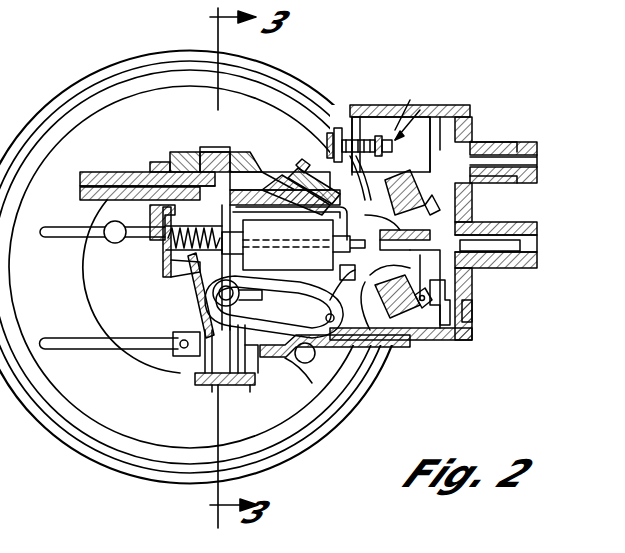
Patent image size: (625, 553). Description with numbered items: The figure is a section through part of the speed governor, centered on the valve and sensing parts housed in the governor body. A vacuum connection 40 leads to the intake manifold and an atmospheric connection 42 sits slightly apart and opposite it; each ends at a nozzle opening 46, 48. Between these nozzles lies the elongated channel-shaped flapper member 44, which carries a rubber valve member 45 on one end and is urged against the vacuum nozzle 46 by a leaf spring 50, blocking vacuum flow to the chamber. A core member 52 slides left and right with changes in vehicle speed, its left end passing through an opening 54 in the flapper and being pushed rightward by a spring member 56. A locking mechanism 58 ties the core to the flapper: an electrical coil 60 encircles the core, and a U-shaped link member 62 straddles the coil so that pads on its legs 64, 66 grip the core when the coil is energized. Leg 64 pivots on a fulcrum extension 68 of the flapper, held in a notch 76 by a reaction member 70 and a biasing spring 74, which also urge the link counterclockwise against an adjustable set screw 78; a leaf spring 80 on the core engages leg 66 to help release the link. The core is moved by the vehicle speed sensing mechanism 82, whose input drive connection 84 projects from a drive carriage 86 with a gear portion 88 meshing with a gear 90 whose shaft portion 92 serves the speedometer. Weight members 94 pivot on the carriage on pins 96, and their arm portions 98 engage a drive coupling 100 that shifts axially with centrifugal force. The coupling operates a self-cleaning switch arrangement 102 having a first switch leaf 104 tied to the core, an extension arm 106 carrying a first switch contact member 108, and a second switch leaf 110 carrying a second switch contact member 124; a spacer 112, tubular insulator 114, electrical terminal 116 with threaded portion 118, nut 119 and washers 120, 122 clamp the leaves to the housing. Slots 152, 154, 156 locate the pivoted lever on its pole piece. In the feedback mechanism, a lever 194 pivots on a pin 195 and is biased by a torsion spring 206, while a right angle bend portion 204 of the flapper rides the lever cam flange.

The vacuum connection 40 is at (107, 172).
The atmospheric connection 42 is at (256, 182).
The flapper member 44 is at (210, 160).
The rubber valve member 45 is at (218, 150).
The nozzle opening 46 is at (182, 160).
The nozzle opening 48 is at (240, 162).
The leaf spring 50 is at (200, 333).
The core member 52 is at (166, 270).
The opening 54 is at (190, 280).
The spring member 56 is at (168, 248).
The locking mechanism 58 is at (268, 190).
The electrical coil 60 is at (316, 284).
The link member 62 is at (292, 252).
The leg 64 is at (246, 232).
The leg 66 is at (298, 232).
The fulcrum extension 68 is at (121, 222).
The reaction member 70 is at (166, 217).
The biasing spring 74 is at (162, 162).
The notch 76 is at (140, 240).
The adjustable set screw 78 is at (285, 172).
The leaf spring 80 is at (350, 275).
The vehicle speed sensing mechanism 82 is at (436, 117).
The input drive connection 84 is at (535, 242).
The drive carriage 86 is at (474, 310).
The gear portion 88 is at (462, 290).
The gear 90 is at (462, 112).
The shaft portion 92 is at (535, 152).
The weight members 94 is at (410, 126).
The pins 96 is at (421, 341).
The arm portions 98 is at (401, 291).
The drive coupling 100 is at (357, 300).
The self-cleaning switch arrangement 102 is at (410, 115).
The first switch leaf 104 is at (311, 174).
The extension arm 106 is at (376, 140).
The first switch contact member 108 is at (397, 231).
The second switch leaf 110 is at (330, 132).
The spacer 112 is at (358, 140).
The tubular insulator 114 is at (375, 130).
The electrical terminal 116 is at (340, 128).
The threaded portion 118 is at (405, 105).
The nut 119 is at (395, 100).
The washer 120 is at (348, 140).
The washer 122 is at (370, 138).
The second switch contact member 124 is at (395, 180).
The slot 152 is at (262, 308).
The slot 154 is at (262, 296).
The slot 156 is at (256, 250).
The lever 194 is at (200, 385).
The pin 195 is at (255, 368).
The right angle bend portion 204 is at (218, 388).
The torsion spring 206 is at (246, 386).